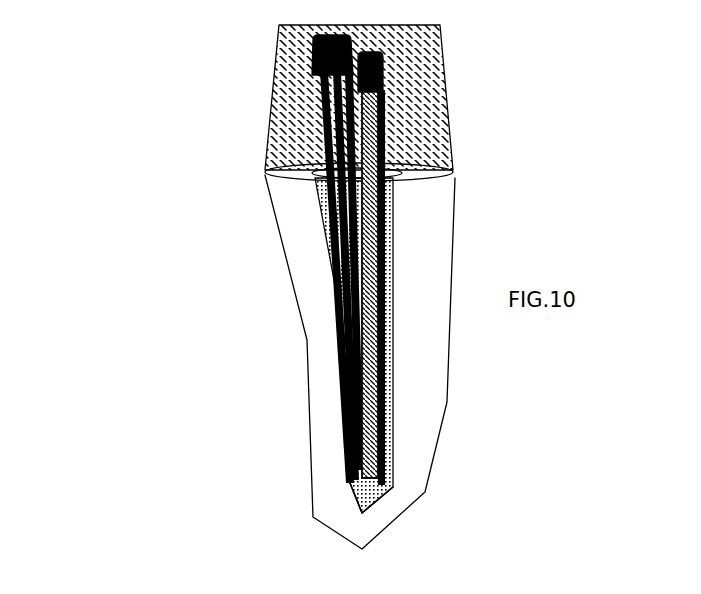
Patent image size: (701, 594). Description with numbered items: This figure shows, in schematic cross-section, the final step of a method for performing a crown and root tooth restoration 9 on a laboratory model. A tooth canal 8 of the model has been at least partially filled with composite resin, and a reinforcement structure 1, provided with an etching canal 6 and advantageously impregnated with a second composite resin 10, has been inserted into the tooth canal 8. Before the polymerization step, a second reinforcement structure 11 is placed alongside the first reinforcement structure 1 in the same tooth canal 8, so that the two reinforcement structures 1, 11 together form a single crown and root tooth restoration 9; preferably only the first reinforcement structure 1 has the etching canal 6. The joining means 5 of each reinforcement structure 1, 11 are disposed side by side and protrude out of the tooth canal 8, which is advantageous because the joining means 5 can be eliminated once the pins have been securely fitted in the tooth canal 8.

The crown and root tooth restoration 9 is at (221, 83).
The second composite resin 10 is at (453, 160).
The tooth canal 8 is at (397, 240).
The etching canal 6 is at (390, 473).
The second reinforcement structure 11 is at (317, 132).
The reinforcement structure 1 is at (393, 115).
The joining means 5 is at (397, 75).